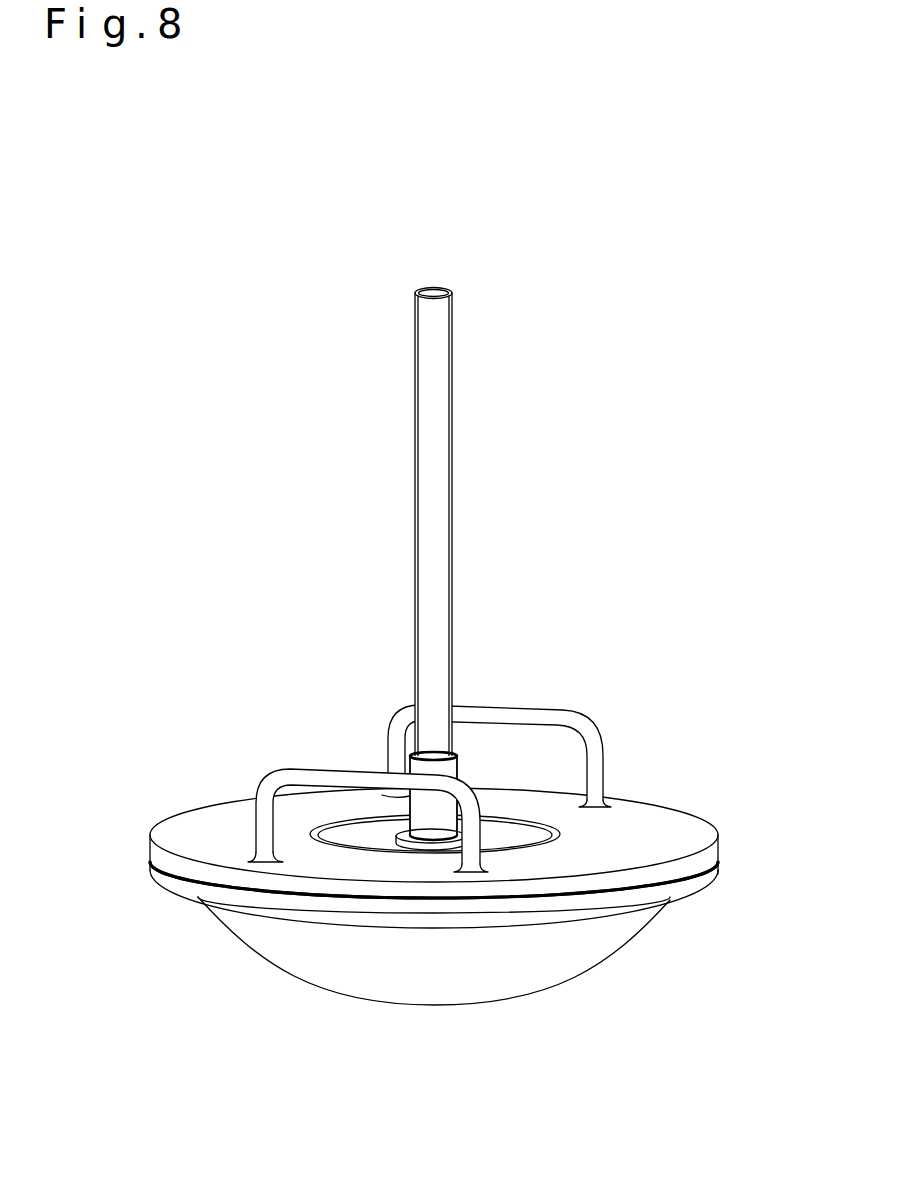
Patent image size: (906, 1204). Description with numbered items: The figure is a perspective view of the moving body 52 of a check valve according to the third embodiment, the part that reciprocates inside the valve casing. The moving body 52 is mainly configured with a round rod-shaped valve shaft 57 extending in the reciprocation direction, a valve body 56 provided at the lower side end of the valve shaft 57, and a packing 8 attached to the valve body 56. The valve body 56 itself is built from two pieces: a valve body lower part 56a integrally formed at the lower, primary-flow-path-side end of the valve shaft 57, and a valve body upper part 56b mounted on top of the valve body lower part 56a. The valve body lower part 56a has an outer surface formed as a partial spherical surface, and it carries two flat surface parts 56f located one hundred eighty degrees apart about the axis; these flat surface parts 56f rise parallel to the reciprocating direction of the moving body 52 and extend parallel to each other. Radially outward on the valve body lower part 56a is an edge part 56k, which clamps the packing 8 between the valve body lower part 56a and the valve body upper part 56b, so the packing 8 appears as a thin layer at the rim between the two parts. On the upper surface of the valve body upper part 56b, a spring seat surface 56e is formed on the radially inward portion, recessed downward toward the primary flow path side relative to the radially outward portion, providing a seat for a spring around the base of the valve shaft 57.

The moving body 52 is at (463, 651).
The valve shaft 57 is at (452, 489).
The valve body 56 is at (463, 680).
The spring seat surface 56e is at (510, 833).
The valve body upper part 56b is at (463, 838).
The packing 8 is at (718, 857).
The edge part 56k is at (653, 905).
The flat surface part 56f is at (443, 984).
The valve body lower part 56a is at (473, 1004).